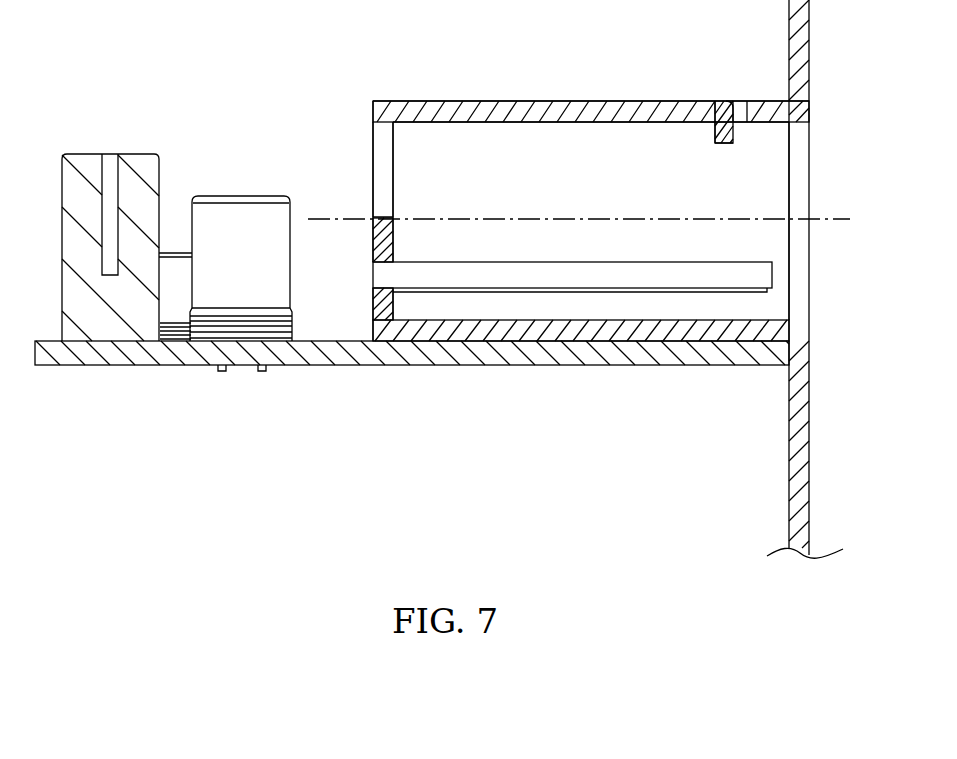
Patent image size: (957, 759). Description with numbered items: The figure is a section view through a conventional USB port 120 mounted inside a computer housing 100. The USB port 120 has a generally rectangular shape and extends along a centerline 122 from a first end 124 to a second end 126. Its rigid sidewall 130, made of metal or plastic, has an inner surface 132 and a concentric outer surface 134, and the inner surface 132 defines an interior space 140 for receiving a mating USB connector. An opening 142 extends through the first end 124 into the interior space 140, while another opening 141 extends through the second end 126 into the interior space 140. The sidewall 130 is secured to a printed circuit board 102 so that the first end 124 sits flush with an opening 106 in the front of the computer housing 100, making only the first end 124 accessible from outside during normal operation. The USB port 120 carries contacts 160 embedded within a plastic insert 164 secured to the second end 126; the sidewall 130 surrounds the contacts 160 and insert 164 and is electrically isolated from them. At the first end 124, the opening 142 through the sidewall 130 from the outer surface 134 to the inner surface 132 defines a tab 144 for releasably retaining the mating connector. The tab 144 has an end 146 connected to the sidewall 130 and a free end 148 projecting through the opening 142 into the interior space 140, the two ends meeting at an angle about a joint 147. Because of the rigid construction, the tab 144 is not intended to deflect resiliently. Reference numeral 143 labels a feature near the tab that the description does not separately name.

The computer housing 100 is at (811, 11).
The printed circuit board 102 is at (418, 367).
The opening 106 is at (818, 153).
The USB port 120 is at (592, 205).
The centerline 122 is at (340, 221).
The first end 124 is at (771, 62).
The second end 126 is at (355, 97).
The sidewall 130 is at (430, 110).
The inner surface 132 is at (574, 122).
The outer surface 134 is at (590, 105).
The interior space 140 is at (422, 152).
The opening 141 is at (370, 179).
The opening 142 is at (813, 274).
The slot 143 is at (750, 119).
The tab 144 is at (731, 101).
The end 146 is at (716, 106).
The joint 147 is at (735, 143).
The free end 148 is at (718, 138).
The contacts 160 is at (578, 289).
The plastic insert 164 is at (683, 278).